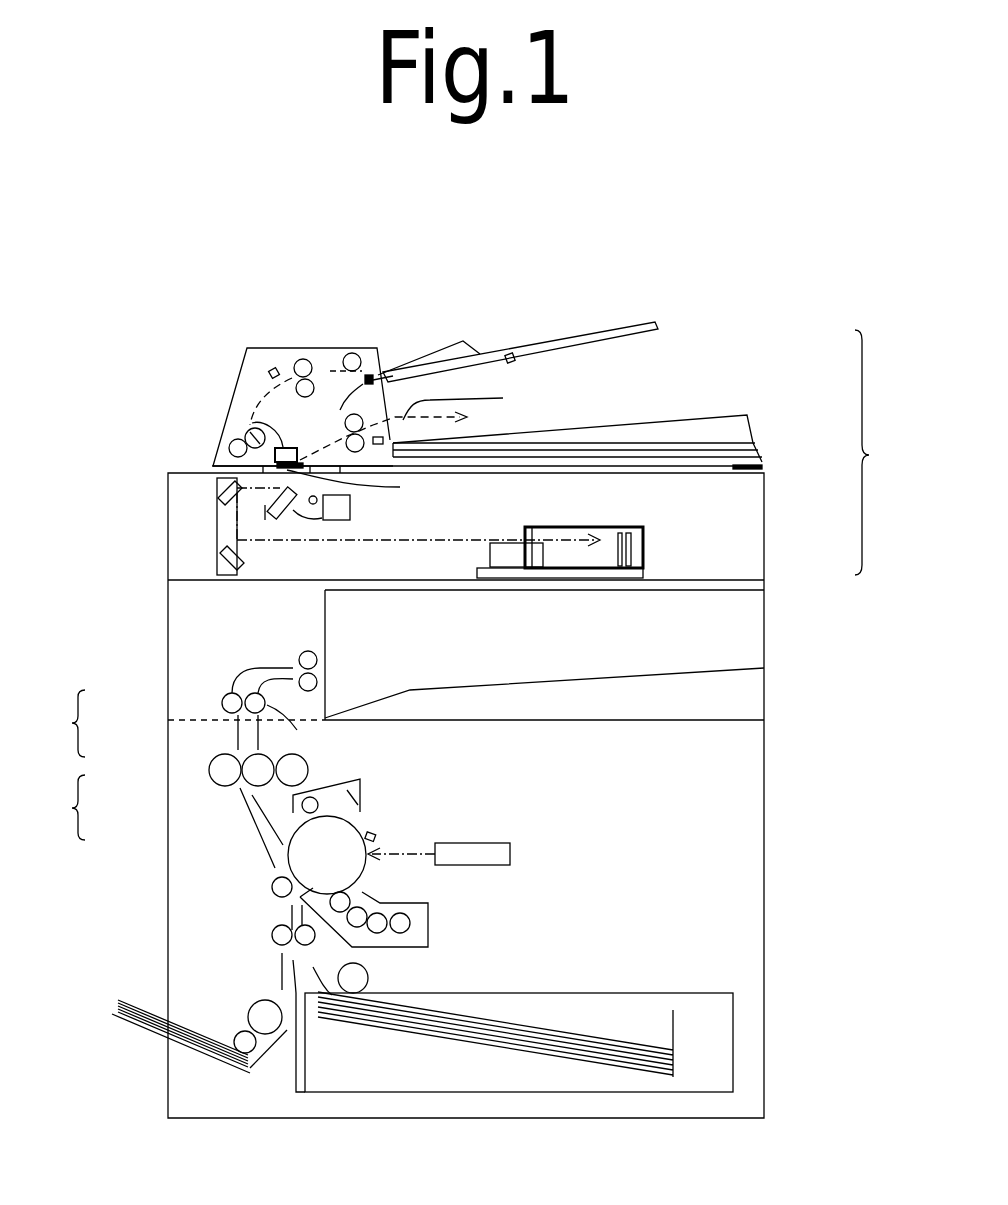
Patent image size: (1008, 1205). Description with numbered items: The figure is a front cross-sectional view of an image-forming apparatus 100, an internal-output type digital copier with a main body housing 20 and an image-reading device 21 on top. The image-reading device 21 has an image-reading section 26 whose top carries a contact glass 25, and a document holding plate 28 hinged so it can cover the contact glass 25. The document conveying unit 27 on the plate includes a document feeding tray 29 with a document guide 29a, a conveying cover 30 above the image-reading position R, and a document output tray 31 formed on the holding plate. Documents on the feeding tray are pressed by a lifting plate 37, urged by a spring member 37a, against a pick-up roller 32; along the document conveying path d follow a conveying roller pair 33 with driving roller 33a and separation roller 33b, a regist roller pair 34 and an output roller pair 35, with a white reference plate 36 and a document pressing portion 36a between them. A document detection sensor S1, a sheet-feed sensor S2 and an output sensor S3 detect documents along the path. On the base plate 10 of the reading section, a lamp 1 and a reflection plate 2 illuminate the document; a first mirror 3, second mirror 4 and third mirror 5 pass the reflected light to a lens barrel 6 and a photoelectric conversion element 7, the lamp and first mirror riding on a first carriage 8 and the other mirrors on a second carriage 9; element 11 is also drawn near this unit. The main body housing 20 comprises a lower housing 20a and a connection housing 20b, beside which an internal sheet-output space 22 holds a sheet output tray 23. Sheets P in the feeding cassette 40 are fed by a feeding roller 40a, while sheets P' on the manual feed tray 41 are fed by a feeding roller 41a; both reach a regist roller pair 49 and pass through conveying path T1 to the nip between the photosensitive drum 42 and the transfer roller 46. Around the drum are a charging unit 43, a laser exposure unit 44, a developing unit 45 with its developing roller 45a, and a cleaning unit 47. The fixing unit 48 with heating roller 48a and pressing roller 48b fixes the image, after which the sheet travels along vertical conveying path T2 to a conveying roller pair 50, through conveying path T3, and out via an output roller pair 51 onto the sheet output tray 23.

The image-forming apparatus 100 is at (197, 284).
The image-reading device 21 is at (883, 452).
The image-reading section 26 is at (764, 538).
The contact glass 25 is at (765, 468).
The document holding plate 28 is at (765, 455).
The document output tray 31 is at (700, 422).
The document feeding tray 29 is at (612, 328).
The document guide 29a is at (445, 345).
The document conveying unit 27 is at (506, 326).
The conveying cover 30 is at (380, 347).
The pick-up roller 32 is at (352, 352).
The conveying roller pair 33 is at (289, 324).
The driving roller 33a is at (296, 360).
The separation roller 33b is at (313, 380).
The regist roller pair 34 is at (229, 447).
The output roller pair 35 is at (268, 373).
The white reference plate 36 is at (288, 448).
The document pressing portion 36a is at (250, 435).
The lifting plate 37 is at (378, 374).
The spring member 37a is at (344, 421).
The document detection sensor S1 is at (513, 355).
The sheet-feed sensor S2 is at (330, 422).
The output sensor S3 is at (477, 425).
The document conveying path d is at (467, 402).
The image-reading position R is at (355, 488).
The second carriage 9 is at (215, 520).
The second mirror 4 is at (230, 492).
The third mirror 5 is at (218, 563).
The first carriage 8 is at (265, 507).
The first mirror 3 is at (290, 514).
The lamp 1 is at (315, 506).
The reflection plate 2 is at (352, 512).
The lens barrel 6 is at (500, 545).
The photoelectric conversion element 7 is at (610, 527).
The base plate 10 is at (650, 575).
The sensor board 11 is at (640, 528).
The internal sheet-output space 22 is at (698, 637).
The sheet output tray 23 is at (698, 675).
The output roller pair 51 is at (326, 668).
The conveying roller pair 50 is at (301, 729).
The conveying path T3 is at (272, 672).
The vertical conveying path T2 is at (238, 735).
The conveying path T1 is at (290, 913).
The main body housing 20 is at (106, 724).
The lower housing 20a is at (168, 755).
The connection housing 20b is at (168, 695).
The fixing unit 48 is at (179, 797).
The heating roller 48a is at (208, 772).
The pressing roller 48b is at (240, 793).
The cleaning unit 47 is at (345, 782).
The photosensitive drum 42 is at (355, 825).
The charging unit 43 is at (378, 838).
The laser exposure unit 44 is at (488, 843).
The transfer roller 46 is at (272, 886).
The developing unit 45 is at (428, 938).
The developing roller 45a is at (350, 897).
The regist roller pair 49 is at (270, 938).
The feeding roller 40a is at (368, 978).
The feeding cassette 40 is at (735, 1010).
The sheets P is at (495, 1014).
The sheets P' is at (111, 974).
The manual feed tray 41 is at (135, 1030).
The feeding roller 41a is at (240, 1033).